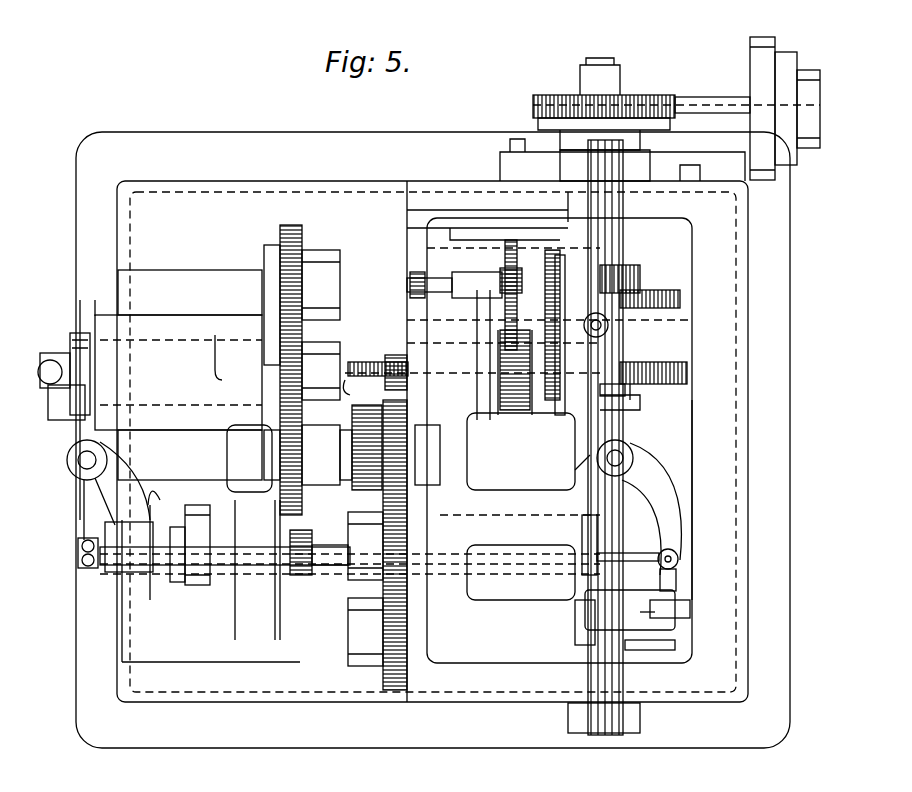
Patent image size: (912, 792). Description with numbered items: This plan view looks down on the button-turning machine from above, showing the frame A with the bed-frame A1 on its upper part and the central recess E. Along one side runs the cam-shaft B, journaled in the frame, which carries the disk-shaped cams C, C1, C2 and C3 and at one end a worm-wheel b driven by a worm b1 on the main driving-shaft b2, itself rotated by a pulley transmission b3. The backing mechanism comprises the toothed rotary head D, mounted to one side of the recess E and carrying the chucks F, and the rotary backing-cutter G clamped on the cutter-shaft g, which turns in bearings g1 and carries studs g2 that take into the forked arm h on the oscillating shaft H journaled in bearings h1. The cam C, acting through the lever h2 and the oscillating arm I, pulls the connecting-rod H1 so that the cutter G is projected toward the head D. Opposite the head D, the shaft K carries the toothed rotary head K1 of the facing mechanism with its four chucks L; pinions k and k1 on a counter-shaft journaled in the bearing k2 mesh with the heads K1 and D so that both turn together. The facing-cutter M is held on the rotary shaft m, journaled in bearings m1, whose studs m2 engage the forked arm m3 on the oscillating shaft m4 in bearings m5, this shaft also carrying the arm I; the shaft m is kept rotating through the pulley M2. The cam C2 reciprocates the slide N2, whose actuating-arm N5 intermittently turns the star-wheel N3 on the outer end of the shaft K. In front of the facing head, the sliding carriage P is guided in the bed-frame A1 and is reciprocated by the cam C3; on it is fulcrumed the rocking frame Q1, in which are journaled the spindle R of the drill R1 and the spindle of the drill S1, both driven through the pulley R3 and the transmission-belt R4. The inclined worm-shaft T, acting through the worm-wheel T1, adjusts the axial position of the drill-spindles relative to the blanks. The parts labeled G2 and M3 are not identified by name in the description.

The frame A is at (118, 140).
The bed-frame A1 is at (423, 218).
The cam-shaft B is at (623, 250).
The cam C is at (636, 628).
The cam C1 is at (640, 455).
The cam C2 is at (642, 384).
The cam C3 is at (672, 308).
The toothed rotary head D is at (407, 630).
The central recess E is at (84, 310).
The chucks F is at (352, 589).
The backing-cutter G is at (335, 565).
The pulley hub G2 is at (186, 582).
The oscillating shaft H is at (67, 460).
The connecting-rod H1 is at (658, 556).
The oscillating arm I is at (692, 517).
The shaft K is at (168, 346).
The toothed rotary head K1 is at (280, 240).
The chucks L is at (310, 262).
The facing-cutter M is at (370, 372).
The pulley M2 is at (499, 372).
The housing block M3 is at (507, 506).
The slide N2 is at (95, 300).
The star-wheel N3 is at (72, 340).
The actuating-arm N5 is at (50, 408).
The sliding carriage P is at (430, 240).
The rocking frame Q1 is at (491, 355).
The spindle R is at (412, 284).
The drill R1 is at (390, 281).
The pulley R3 is at (522, 272).
The transmission-belt R4 is at (561, 332).
The drill S1 is at (348, 391).
The worm-shaft T is at (505, 256).
The worm-wheel T1 is at (505, 225).
The worm-wheel b is at (533, 104).
The worm b1 is at (582, 88).
The main driving-shaft b2 is at (692, 104).
The pulley transmission b3 is at (778, 56).
The cutter-shaft g is at (210, 575).
The bearings g1 is at (110, 562).
The studs g2 is at (78, 548).
The arm h is at (80, 506).
The bearings h1 is at (92, 478).
The lever h2 is at (660, 630).
The pinion k is at (342, 440).
The pinion k1 is at (367, 442).
The bearing k2 is at (228, 458).
The rotary shaft m is at (640, 366).
The bearings m1 is at (405, 353).
The studs m2 is at (626, 390).
The oscillating arm m3 is at (640, 408).
The oscillating shaft m4 is at (660, 490).
The bearings m5 is at (588, 478).